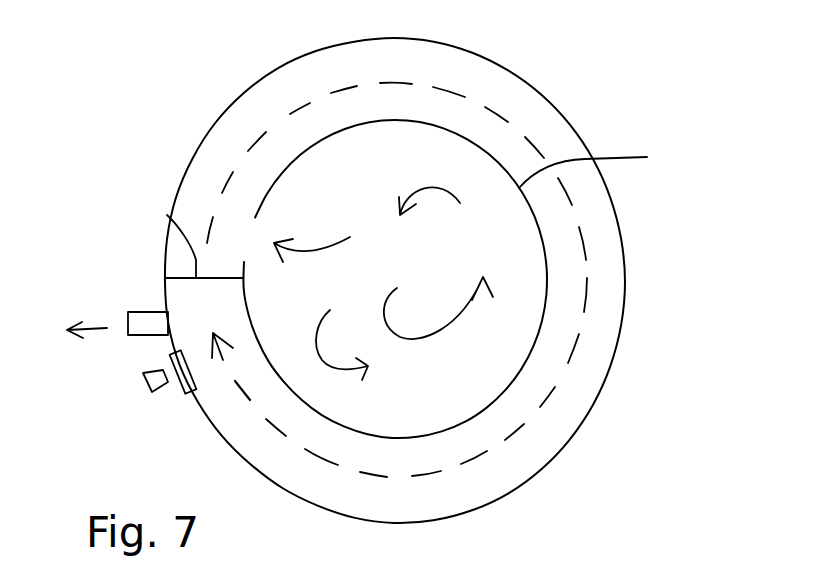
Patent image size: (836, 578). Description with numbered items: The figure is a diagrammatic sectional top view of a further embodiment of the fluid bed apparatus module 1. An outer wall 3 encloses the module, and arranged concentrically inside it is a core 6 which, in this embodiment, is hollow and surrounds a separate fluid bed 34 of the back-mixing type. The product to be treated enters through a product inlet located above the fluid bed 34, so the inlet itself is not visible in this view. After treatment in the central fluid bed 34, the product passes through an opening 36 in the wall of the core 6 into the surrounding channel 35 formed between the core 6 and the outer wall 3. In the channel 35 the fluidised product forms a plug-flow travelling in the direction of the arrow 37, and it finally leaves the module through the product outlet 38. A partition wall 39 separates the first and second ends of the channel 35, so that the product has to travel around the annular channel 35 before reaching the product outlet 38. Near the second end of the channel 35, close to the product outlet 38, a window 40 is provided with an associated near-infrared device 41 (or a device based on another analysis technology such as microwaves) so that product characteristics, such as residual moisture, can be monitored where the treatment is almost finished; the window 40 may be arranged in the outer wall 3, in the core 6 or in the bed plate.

The fluid bed apparatus module 1 is at (383, 281).
The outer wall 3 is at (538, 92).
The core 6 is at (597, 164).
The fluid bed 34 is at (470, 270).
The channel 35 is at (533, 445).
The opening 36 is at (254, 230).
The arrow 37 is at (240, 388).
The product outlet 38 is at (143, 316).
The partition wall 39 is at (167, 215).
The window 40 is at (172, 360).
The near-infrared device 41 is at (142, 377).